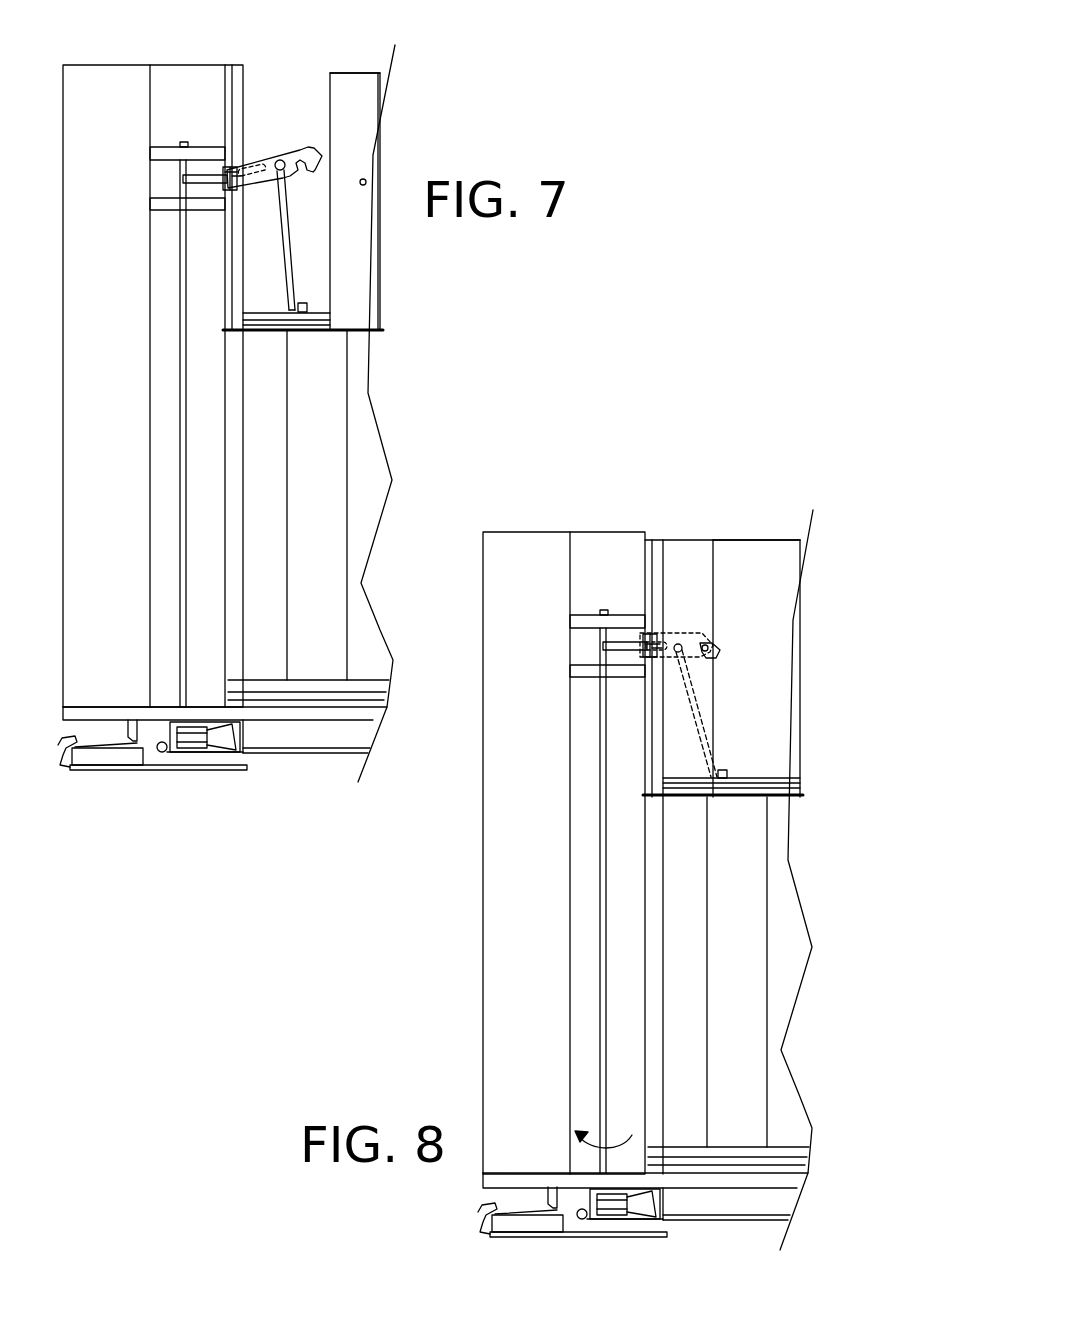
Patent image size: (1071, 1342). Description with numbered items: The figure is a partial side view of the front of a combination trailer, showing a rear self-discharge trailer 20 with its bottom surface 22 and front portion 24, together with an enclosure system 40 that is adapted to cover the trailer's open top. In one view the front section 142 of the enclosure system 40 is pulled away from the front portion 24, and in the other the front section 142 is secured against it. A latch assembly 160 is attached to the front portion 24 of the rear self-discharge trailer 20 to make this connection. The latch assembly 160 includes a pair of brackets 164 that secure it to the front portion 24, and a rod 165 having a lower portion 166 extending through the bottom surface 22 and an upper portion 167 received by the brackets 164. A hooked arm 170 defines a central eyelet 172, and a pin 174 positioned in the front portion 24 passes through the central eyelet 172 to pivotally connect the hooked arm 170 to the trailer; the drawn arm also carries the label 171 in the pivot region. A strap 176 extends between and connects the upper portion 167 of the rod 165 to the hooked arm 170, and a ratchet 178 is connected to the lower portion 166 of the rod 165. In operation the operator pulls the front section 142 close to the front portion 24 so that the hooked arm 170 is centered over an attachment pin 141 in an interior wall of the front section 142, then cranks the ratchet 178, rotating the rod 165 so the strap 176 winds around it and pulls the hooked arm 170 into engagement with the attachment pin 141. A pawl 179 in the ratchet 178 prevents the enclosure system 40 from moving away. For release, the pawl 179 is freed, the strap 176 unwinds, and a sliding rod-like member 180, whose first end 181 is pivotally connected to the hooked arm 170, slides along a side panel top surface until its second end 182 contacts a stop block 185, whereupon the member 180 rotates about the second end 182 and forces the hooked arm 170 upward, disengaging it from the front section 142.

In FIG. 7, the rear self-discharge trailer 20 is at (307, 423).
In FIG. 8, the rear self-discharge trailer 20 is at (780, 937).
In FIG. 7, the bottom surface 22 is at (303, 712).
In FIG. 8, the bottom surface 22 is at (783, 1180).
In FIG. 7, the front portion 24 is at (102, 95).
In FIG. 8, the front portion 24 is at (523, 562).
In FIG. 7, the enclosure system 40 is at (382, 215).
In FIG. 8, the enclosure system 40 is at (775, 663).
In FIG. 7, the attachment pin 141 is at (366, 182).
In FIG. 8, the attachment pin 141 is at (720, 643).
In FIG. 7, the front section 142 is at (360, 93).
In FIG. 8, the front section 142 is at (704, 627).
In FIG. 7, the latch assembly 160 is at (258, 128).
In FIG. 8, the latch assembly 160 is at (678, 593).
In FIG. 7, the brackets 164 is at (158, 156).
In FIG. 8, the brackets 164 is at (578, 625).
In FIG. 7, the rod 165 is at (183, 603).
In FIG. 8, the rod 165 is at (603, 1070).
In FIG. 7, the lower portion 166 is at (172, 727).
In FIG. 8, the lower portion 166 is at (592, 1194).
In FIG. 7, the upper portion 167 is at (180, 173).
In FIG. 8, the upper portion 167 is at (600, 642).
In FIG. 7, the hooked arm 170 is at (273, 163).
In FIG. 8, the hooked arm 170 is at (688, 632).
In FIG. 7, the pivot bracket 171 is at (230, 172).
In FIG. 8, the pivot bracket 171 is at (657, 645).
In FIG. 7, the central eyelet 172 is at (234, 175).
In FIG. 8, the central eyelet 172 is at (658, 642).
In FIG. 7, the pin 174 is at (230, 190).
In FIG. 8, the pin 174 is at (650, 658).
In FIG. 7, the strap 176 is at (215, 165).
In FIG. 8, the strap 176 is at (635, 630).
In FIG. 7, the ratchet 178 is at (237, 738).
In FIG. 8, the ratchet 178 is at (657, 1205).
In FIG. 7, the pawl 179 is at (220, 743).
In FIG. 8, the pawl 179 is at (640, 1210).
In FIG. 7, the sliding rod-like member 180 is at (287, 247).
In FIG. 8, the sliding rod-like member 180 is at (693, 710).
In FIG. 7, the first end 181 is at (290, 182).
In FIG. 8, the first end 181 is at (682, 652).
In FIG. 7, the second end 182 is at (307, 330).
In FIG. 8, the second end 182 is at (713, 795).
In FIG. 7, the stop block 185 is at (307, 305).
In FIG. 8, the stop block 185 is at (727, 772).